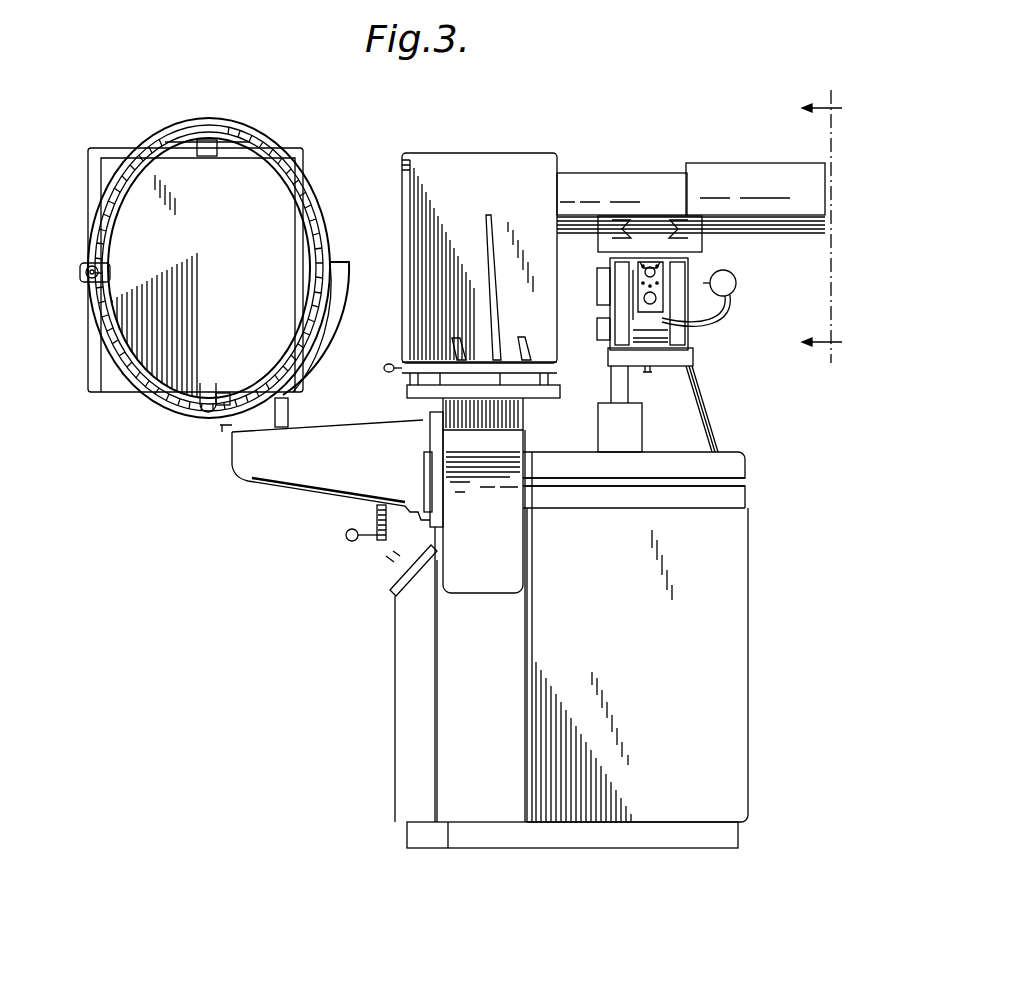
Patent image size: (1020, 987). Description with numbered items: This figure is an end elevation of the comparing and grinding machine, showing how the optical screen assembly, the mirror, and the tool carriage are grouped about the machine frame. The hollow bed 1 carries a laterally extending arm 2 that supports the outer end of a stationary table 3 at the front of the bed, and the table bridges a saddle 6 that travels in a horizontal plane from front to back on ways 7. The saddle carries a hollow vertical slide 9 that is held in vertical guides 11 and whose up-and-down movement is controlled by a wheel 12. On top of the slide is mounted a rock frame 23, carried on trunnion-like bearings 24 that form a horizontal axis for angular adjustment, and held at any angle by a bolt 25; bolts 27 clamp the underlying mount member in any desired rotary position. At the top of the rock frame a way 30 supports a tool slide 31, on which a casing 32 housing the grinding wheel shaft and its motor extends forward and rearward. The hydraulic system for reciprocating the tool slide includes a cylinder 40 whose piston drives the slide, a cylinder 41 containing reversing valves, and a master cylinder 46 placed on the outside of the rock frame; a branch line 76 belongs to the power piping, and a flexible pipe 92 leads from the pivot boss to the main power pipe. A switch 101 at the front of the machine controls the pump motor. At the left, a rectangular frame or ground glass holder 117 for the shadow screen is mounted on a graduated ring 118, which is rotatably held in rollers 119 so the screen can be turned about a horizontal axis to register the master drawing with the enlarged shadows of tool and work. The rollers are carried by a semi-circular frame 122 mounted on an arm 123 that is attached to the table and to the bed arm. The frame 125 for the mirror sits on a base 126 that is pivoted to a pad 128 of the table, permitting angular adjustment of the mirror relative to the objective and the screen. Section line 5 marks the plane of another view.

The hollow bed 1 is at (745, 590).
The laterally extending arm 2 is at (478, 617).
The table 3 is at (528, 410).
The section line 5 is at (822, 228).
The saddle 6 is at (568, 455).
The ways 7 is at (745, 500).
The hollow vertical slide 9 is at (705, 425).
The vertical guides 11 is at (604, 400).
The wheel 12 is at (372, 515).
The rock frame 23 is at (690, 262).
The trunnion-like bearings 24 is at (596, 278).
The bolt 25 is at (596, 330).
The bolts 27 is at (648, 374).
The way 30 is at (632, 220).
The tool slide 31 is at (606, 214).
The casing 32 is at (755, 170).
The cylinder 40 is at (651, 270).
The cylinder 41 is at (645, 298).
The master cylinder 46 is at (736, 283).
The branch line 76 is at (716, 318).
The flexible pipe 92 is at (648, 348).
The switch 101 is at (392, 552).
The rectangular frame or ground glass holder 117 is at (303, 150).
The ring 118 is at (228, 132).
The rollers 119 is at (78, 258).
The semi-circular frame 122 is at (150, 410).
The arm 123 is at (282, 480).
The frame for the mirror 125 is at (448, 160).
The base 126 is at (412, 378).
The pad 128 is at (418, 402).